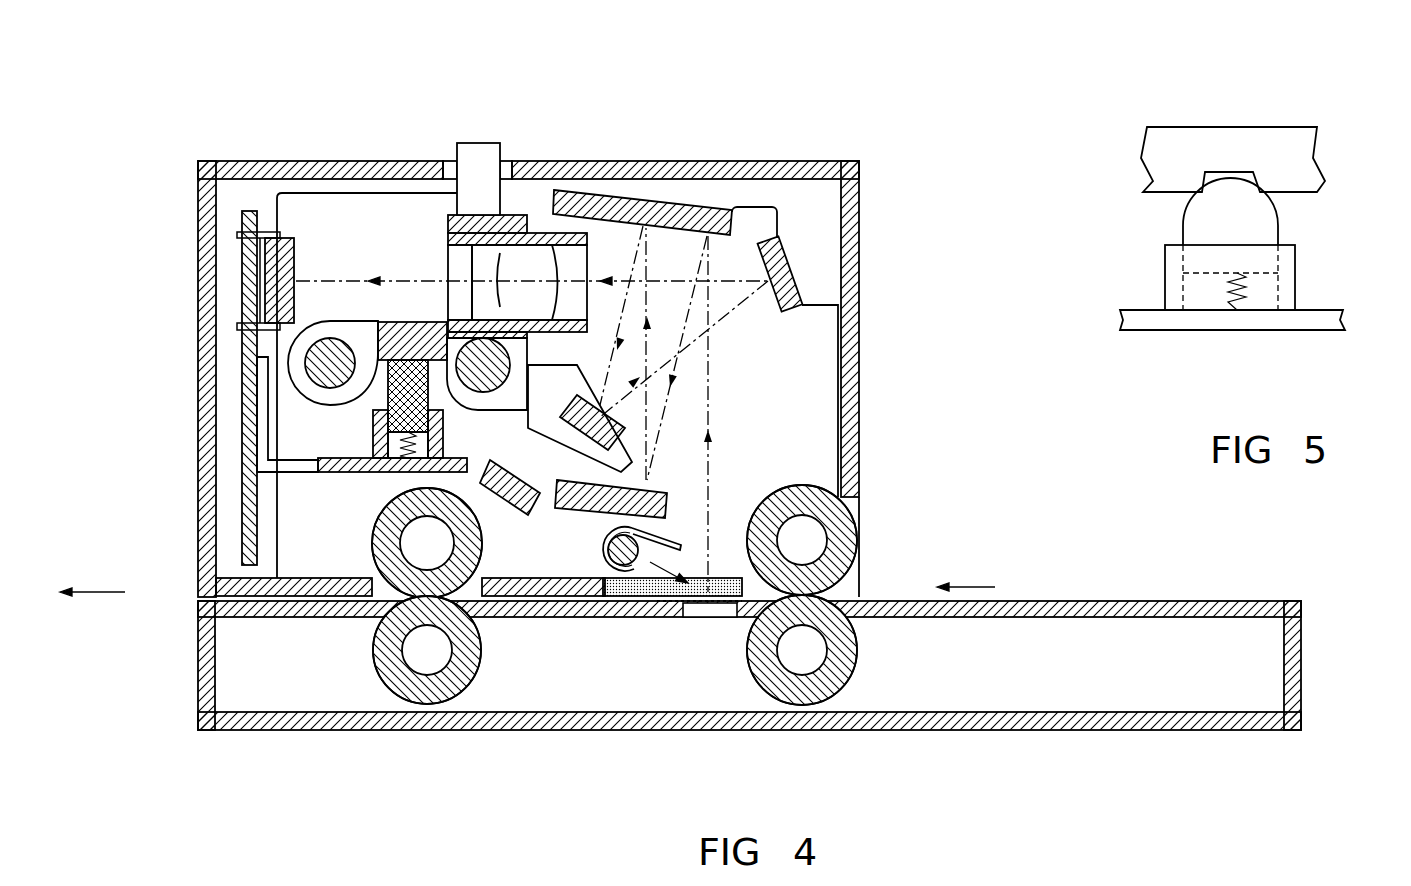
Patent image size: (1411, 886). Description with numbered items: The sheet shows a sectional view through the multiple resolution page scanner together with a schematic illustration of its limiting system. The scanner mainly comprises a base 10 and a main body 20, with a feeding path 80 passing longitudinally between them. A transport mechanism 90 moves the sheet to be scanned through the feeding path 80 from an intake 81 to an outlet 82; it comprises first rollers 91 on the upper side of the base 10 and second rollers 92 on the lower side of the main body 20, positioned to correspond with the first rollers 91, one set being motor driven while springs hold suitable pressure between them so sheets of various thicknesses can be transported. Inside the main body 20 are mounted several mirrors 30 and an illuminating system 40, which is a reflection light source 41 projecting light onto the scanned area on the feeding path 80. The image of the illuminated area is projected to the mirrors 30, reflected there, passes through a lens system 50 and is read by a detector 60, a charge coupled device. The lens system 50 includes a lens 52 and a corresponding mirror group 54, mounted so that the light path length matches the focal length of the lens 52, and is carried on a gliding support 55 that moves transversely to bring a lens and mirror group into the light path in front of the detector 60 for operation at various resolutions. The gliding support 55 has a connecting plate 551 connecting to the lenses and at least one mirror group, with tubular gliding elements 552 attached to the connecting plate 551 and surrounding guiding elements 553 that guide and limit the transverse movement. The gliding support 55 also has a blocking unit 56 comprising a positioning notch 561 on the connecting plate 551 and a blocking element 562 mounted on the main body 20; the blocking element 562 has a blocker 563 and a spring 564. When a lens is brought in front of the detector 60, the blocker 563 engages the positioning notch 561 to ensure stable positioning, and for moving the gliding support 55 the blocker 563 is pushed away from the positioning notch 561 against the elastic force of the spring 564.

In FIG. 4, the base 10 is at (696, 691).
In FIG. 4, the main body 20 is at (872, 423).
In FIG. 5, the main body 20 is at (1160, 318).
In FIG. 4, the mirrors 30 is at (707, 192).
In FIG. 4, the illuminating system 40 is at (597, 550).
In FIG. 4, the reflection light source 41 is at (624, 562).
In FIG. 4, the lens system 50 is at (437, 258).
In FIG. 4, the lens 52 is at (447, 232).
In FIG. 4, the mirror group 54 is at (583, 395).
In FIG. 4, the gliding support 55 is at (417, 303).
In FIG. 4, the blocking unit 56 is at (382, 430).
In FIG. 5, the blocking unit 56 is at (1184, 288).
In FIG. 4, the detector 60 is at (280, 267).
In FIG. 4, the feeding path 80 is at (330, 602).
In FIG. 4, the intake 81 is at (863, 593).
In FIG. 4, the outlet 82 is at (205, 600).
In FIG. 4, the transport mechanism 90 is at (749, 691).
In FIG. 4, the first rollers 91 is at (440, 690).
In FIG. 4, the second rollers 92 is at (798, 485).
In FIG. 4, the connecting plate 551 is at (390, 322).
In FIG. 5, the connecting plate 551 is at (1168, 147).
In FIG. 4, the gliding elements 552 is at (320, 402).
In FIG. 4, the guiding elements 553 is at (312, 368).
In FIG. 5, the positioning notch 561 is at (1255, 192).
In FIG. 5, the blocking element 562 is at (1172, 292).
In FIG. 5, the blocker 563 is at (1262, 225).
In FIG. 5, the spring 564 is at (1243, 300).